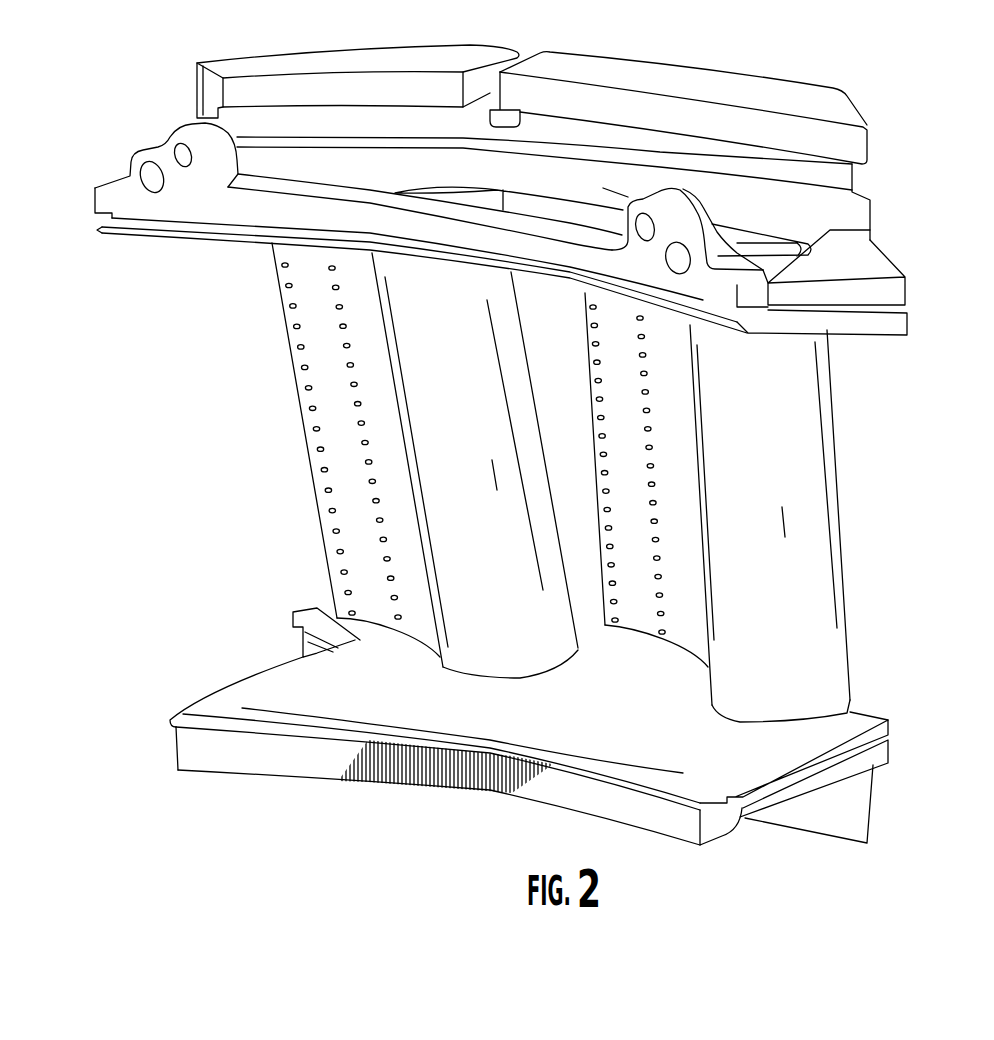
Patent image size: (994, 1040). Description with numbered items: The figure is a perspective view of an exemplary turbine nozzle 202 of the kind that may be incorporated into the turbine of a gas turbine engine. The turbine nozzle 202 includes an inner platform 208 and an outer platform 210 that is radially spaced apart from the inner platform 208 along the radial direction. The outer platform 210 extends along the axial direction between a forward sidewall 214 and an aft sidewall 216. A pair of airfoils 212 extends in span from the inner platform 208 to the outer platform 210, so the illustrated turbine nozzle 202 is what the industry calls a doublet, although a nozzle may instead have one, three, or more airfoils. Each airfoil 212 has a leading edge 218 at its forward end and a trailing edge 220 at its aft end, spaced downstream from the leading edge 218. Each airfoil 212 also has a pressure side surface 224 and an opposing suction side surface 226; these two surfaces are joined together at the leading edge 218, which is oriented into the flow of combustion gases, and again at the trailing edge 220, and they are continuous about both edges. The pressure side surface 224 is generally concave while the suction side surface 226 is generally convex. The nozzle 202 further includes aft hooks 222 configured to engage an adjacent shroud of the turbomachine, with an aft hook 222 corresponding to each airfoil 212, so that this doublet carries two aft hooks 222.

The turbine nozzle 202 is at (66, 174).
The inner platform 208 is at (534, 716).
The outer platform 210 is at (888, 295).
The airfoil 212 is at (560, 482).
The forward sidewall 214 is at (243, 203).
The aft sidewall 216 is at (826, 222).
The leading edge 218 is at (440, 662).
The trailing edge 220 is at (302, 425).
The aft hook 222 is at (327, 62).
The pressure side surface 224 is at (353, 545).
The suction side surface 226 is at (508, 576).